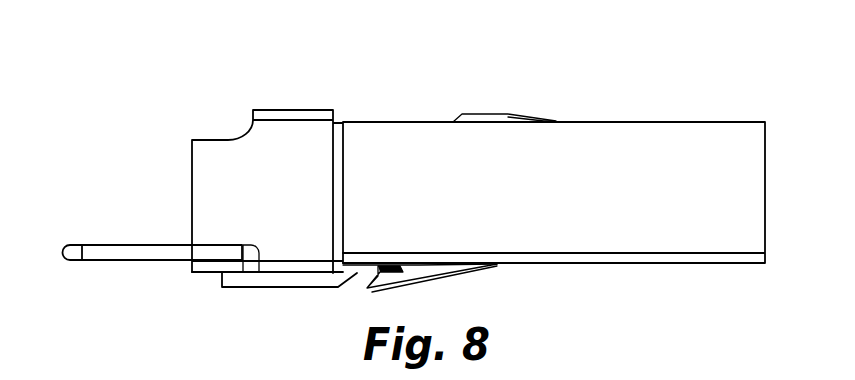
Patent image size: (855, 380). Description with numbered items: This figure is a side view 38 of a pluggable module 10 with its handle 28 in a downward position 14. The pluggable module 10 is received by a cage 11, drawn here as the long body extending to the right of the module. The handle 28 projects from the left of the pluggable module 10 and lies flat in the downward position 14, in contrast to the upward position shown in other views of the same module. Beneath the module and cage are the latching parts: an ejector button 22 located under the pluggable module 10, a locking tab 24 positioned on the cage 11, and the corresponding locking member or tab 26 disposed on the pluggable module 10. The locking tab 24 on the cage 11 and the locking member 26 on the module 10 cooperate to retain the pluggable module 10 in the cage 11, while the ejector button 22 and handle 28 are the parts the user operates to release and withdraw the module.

The pluggable module 10 is at (312, 128).
The cage 11 is at (700, 233).
The downward position 14 is at (80, 265).
The ejector button 22 is at (280, 278).
The locking tab 24 is at (413, 282).
The locking member or tab 26 is at (385, 270).
The handle 28 is at (152, 245).
The side view 38 is at (500, 76).